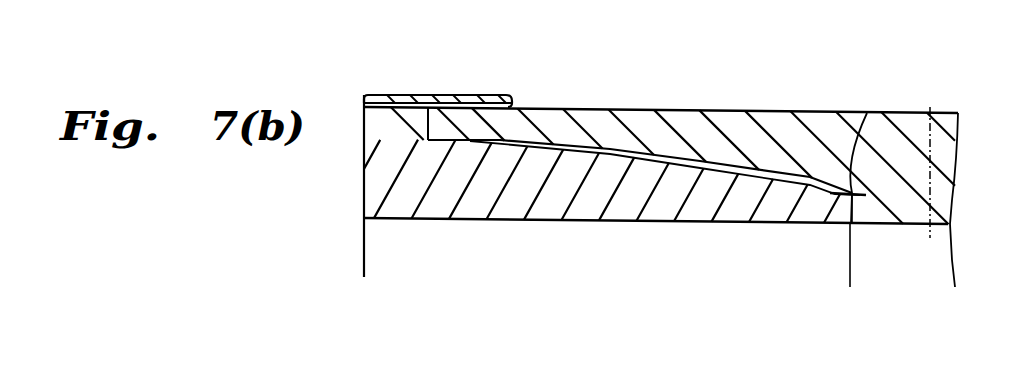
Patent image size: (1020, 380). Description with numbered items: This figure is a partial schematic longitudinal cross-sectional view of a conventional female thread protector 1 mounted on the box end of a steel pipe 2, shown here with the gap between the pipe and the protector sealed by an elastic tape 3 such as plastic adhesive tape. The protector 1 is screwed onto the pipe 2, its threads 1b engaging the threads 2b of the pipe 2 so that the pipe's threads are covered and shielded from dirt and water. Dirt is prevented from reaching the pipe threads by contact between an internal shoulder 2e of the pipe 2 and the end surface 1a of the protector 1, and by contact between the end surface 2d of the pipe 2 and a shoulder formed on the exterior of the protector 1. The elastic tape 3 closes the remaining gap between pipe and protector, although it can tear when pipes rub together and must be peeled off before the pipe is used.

The thread protector 1 is at (490, 197).
The end surface of the protector 1a is at (853, 196).
The threads of the protector 1b is at (627, 153).
The steel pipe 2 is at (676, 124).
The threads of the pipe 2b is at (707, 168).
The end surface of the pipe 2d is at (420, 112).
The internal shoulder of the pipe 2e is at (867, 113).
The elastic tape 3 is at (472, 102).